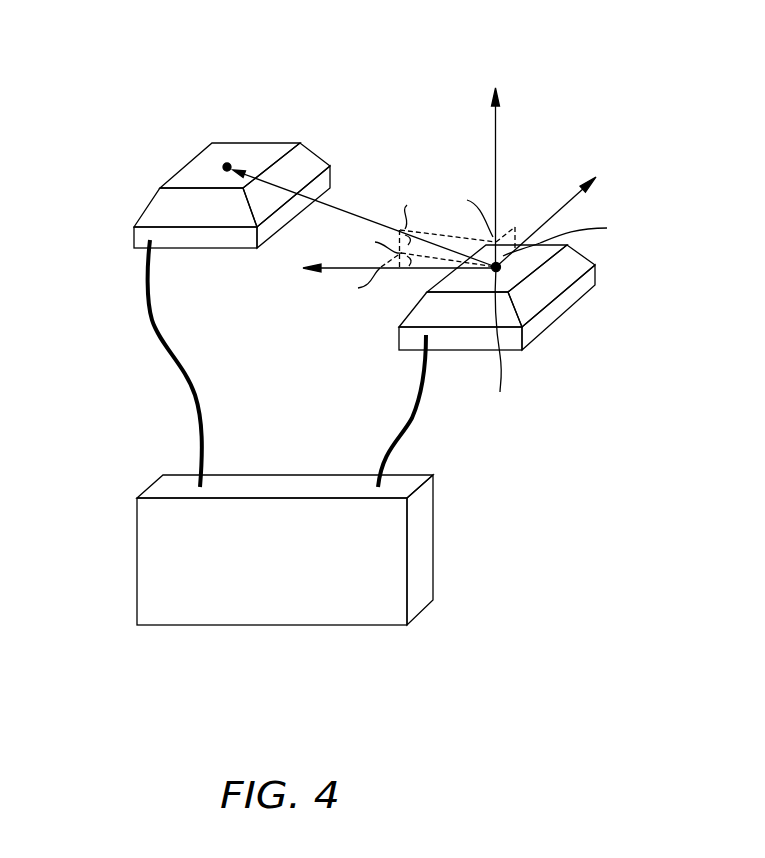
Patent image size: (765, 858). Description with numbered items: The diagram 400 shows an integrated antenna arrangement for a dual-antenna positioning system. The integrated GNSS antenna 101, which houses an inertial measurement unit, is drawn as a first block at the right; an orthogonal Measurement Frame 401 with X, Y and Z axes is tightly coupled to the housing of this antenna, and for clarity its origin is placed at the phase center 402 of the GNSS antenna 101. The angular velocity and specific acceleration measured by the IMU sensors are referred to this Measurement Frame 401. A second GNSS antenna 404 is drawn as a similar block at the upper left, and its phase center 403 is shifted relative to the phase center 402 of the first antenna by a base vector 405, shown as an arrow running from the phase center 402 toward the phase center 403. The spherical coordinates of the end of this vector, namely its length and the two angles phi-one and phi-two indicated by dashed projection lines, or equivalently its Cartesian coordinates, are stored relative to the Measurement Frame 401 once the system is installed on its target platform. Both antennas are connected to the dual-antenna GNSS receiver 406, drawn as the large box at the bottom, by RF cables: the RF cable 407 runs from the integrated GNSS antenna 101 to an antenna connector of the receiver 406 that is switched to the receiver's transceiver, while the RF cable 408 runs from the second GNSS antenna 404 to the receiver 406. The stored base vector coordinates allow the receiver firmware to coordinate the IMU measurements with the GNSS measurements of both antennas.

The diagram 400 is at (331, 28).
The Measurement Frame 401 is at (490, 90).
The phase center 402 is at (501, 345).
The phase center 403 is at (227, 167).
The second GNSS antenna 404 is at (245, 142).
The base vector 405 is at (341, 206).
The dual-antenna GNSS receiver 406 is at (265, 627).
The RF cable 407 is at (410, 418).
The RF cable 408 is at (147, 302).
The integrated GNSS antenna 101 is at (563, 313).